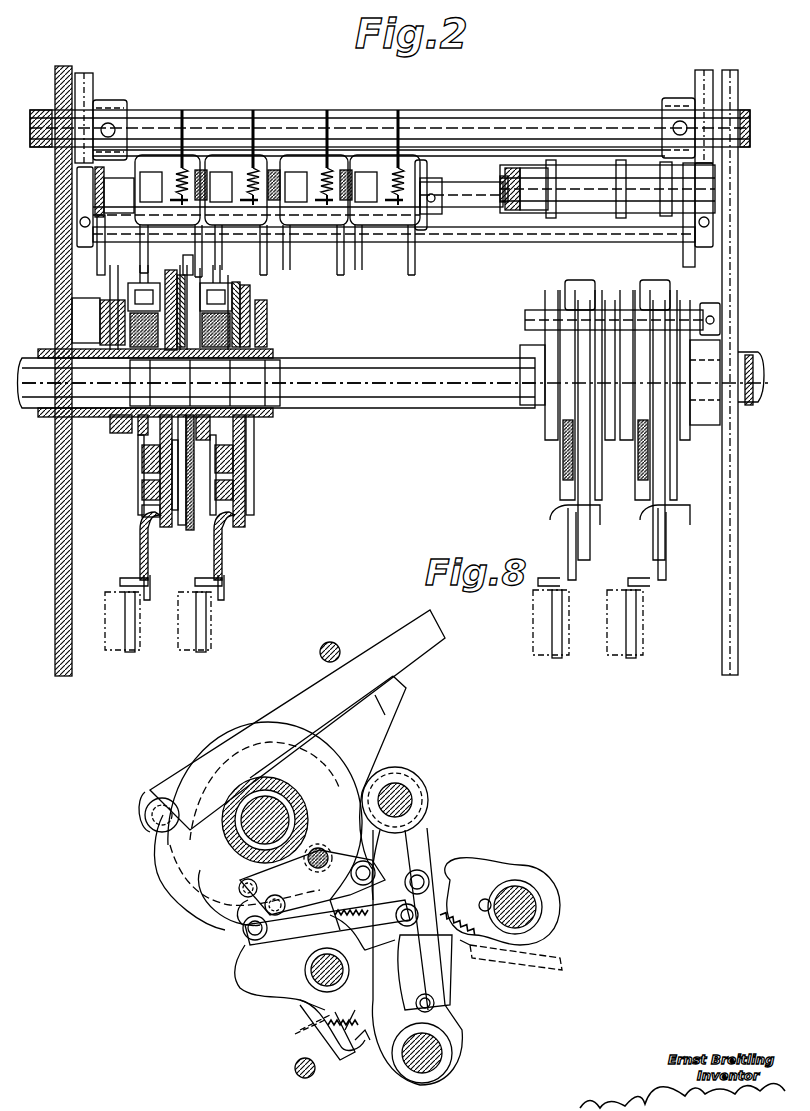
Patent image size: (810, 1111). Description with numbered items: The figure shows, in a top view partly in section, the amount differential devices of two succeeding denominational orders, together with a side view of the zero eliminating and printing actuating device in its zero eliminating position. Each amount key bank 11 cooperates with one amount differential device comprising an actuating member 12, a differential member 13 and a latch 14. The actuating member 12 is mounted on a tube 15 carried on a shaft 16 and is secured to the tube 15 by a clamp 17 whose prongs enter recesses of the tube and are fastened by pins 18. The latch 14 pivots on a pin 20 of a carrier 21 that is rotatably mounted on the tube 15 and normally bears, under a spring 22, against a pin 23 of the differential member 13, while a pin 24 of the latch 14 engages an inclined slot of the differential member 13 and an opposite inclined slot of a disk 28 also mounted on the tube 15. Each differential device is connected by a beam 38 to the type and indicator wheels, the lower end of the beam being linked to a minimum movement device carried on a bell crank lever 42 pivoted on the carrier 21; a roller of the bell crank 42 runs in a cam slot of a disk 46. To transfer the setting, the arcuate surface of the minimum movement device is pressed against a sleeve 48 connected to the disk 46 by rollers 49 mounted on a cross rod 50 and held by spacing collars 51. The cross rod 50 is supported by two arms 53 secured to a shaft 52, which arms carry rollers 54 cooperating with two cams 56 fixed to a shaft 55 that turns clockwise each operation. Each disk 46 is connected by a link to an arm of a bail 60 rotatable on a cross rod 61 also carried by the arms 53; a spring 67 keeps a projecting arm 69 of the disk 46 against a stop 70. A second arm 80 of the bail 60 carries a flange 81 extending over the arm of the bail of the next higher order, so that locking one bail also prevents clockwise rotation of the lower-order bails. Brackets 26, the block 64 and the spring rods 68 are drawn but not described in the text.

In FIG. 2, the amount key bank 11 is at (127, 652).
In FIG. 2, the actuating member 12 is at (160, 468).
In FIG. 2, the differential member 13 is at (232, 292).
In FIG. 2, the latch 14 is at (150, 512).
In FIG. 2, the tube 15 is at (52, 352).
In FIG. 2, the shaft 16 is at (28, 375).
In FIG. 2, the clamp 17 is at (140, 432).
In FIG. 2, the pin 18 is at (205, 383).
In FIG. 2, the pin 20 is at (140, 490).
In FIG. 2, the carrier 21 is at (142, 455).
In FIG. 2, the spring 22 is at (240, 322).
In FIG. 2, the pin 23 is at (171, 300).
In FIG. 2, the pin 24 is at (178, 485).
In FIG. 2, the bracket 26 is at (147, 588).
In FIG. 2, the disk 28 is at (176, 512).
In FIG. 8, the beam 38 is at (440, 628).
In FIG. 2, the bell crank lever 42 is at (188, 258).
In FIG. 2, the disk 46 is at (211, 490).
In FIG. 2, the sleeve 48 is at (199, 431).
In FIG. 2, the roller 49 is at (527, 170).
In FIG. 8, the roller 49 is at (425, 790).
In FIG. 2, the cross rod 50 is at (505, 178).
In FIG. 8, the cross rod 50 is at (400, 792).
In FIG. 2, the spacing collar 51 is at (575, 175).
In FIG. 2, the shaft 52 is at (477, 236).
In FIG. 2, the arm 53 is at (101, 272).
In FIG. 8, the arm 53 is at (415, 840).
In FIG. 2, the roller 54 is at (80, 183).
In FIG. 2, the shaft 55 is at (42, 118).
In FIG. 8, the shaft 55 is at (514, 890).
In FIG. 2, the cam 56 is at (84, 100).
In FIG. 8, the cam 56 is at (465, 878).
In FIG. 2, the bail 60 is at (277, 190).
In FIG. 2, the cross rod 61 is at (457, 195).
In FIG. 2, the block 64 is at (114, 189).
In FIG. 2, the spring 67 is at (280, 186).
In FIG. 2, the spring rod 68 is at (182, 112).
In FIG. 8, the projecting arm 69 is at (404, 683).
In FIG. 8, the stop 70 is at (330, 642).
In FIG. 2, the second arm 80 is at (258, 181).
In FIG. 2, the flange 81 is at (284, 180).